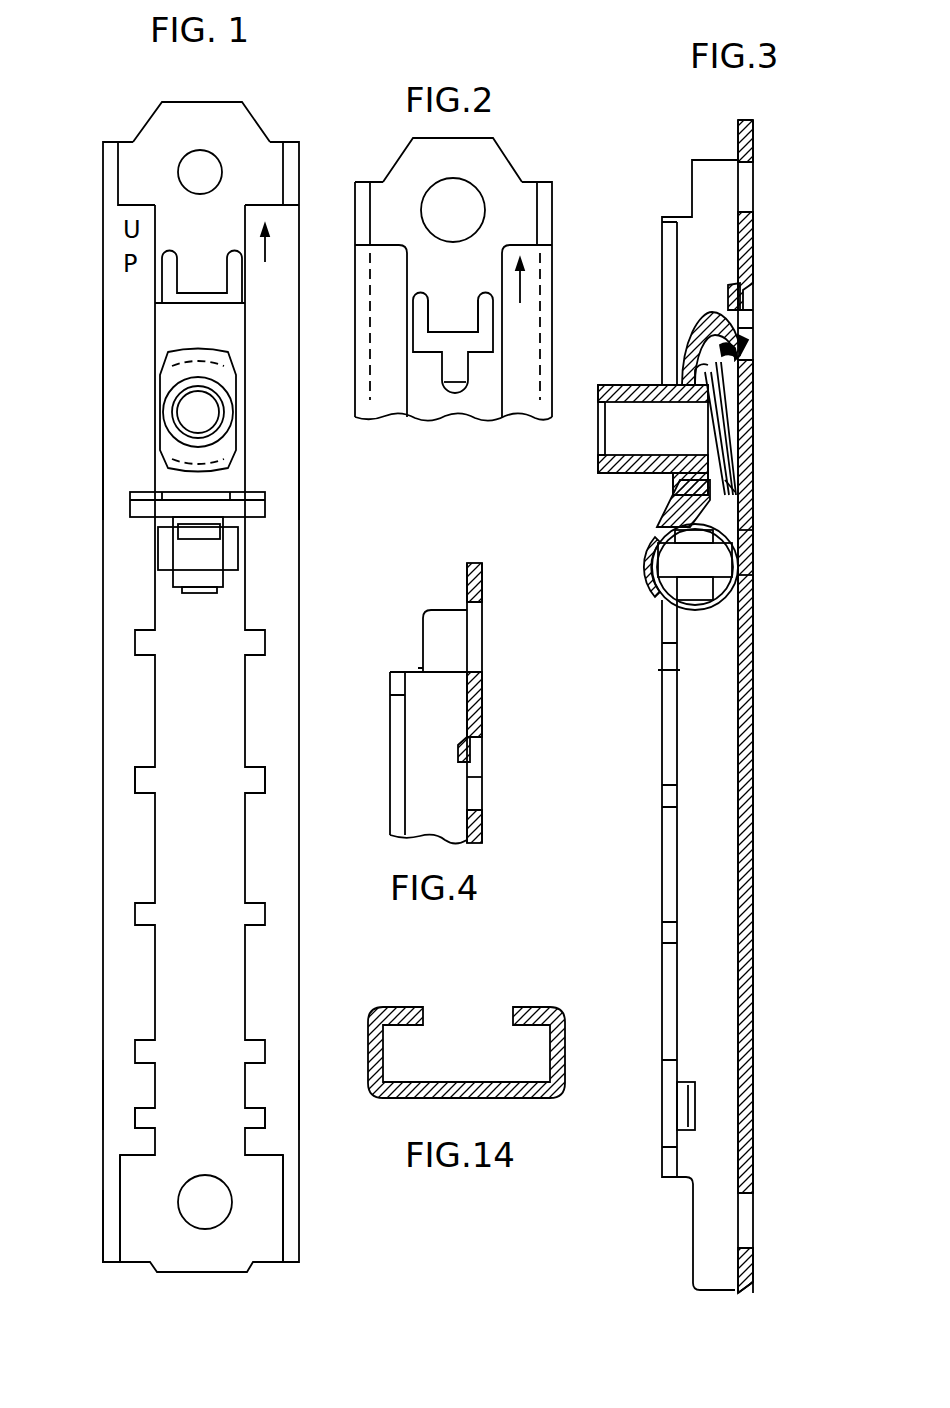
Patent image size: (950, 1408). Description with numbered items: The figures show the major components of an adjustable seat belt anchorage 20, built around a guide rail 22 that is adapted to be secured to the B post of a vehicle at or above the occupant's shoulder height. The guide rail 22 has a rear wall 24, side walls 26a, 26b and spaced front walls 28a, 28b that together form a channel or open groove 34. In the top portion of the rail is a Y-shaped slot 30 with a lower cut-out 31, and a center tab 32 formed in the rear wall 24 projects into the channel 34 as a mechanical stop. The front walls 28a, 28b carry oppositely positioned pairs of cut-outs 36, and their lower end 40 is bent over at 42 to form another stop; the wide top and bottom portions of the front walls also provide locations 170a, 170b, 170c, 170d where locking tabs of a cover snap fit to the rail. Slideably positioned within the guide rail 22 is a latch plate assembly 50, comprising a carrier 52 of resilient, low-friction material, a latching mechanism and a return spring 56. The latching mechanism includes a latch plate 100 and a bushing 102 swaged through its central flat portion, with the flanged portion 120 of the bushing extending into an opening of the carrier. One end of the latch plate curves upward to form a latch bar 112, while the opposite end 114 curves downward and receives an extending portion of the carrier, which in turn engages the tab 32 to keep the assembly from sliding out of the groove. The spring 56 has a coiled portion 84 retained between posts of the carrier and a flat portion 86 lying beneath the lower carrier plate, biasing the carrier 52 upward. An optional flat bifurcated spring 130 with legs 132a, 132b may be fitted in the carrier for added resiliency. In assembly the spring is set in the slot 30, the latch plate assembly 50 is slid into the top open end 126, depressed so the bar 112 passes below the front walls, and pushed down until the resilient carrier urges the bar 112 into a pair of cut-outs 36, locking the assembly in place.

In FIG. 1, the adjustable seat belt anchorage 20 is at (285, 93).
In FIG. 1, the guide rail 22 is at (299, 143).
In FIG. 14, the guide rail 22 is at (383, 1056).
In FIG. 3, the guide rail 22 is at (754, 146).
In FIG. 1, the rear wall 24 is at (237, 127).
In FIG. 2, the rear wall 24 is at (490, 158).
In FIG. 4, the rear wall 24 is at (480, 712).
In FIG. 3, the rear wall 24 is at (748, 742).
In FIG. 1, the side wall 26a is at (104, 312).
In FIG. 3, the side wall 26a is at (692, 244).
In FIG. 1, the side wall 26b is at (299, 323).
In FIG. 1, the front wall 28a is at (104, 402).
In FIG. 1, the front wall 28b is at (270, 453).
In FIG. 2, the Y-shaped slot 30 is at (420, 310).
In FIG. 4, the Y-shaped slot 30 is at (477, 793).
In FIG. 3, the Y-shaped slot 30 is at (755, 321).
In FIG. 2, the lower cut-out 31 is at (457, 374).
In FIG. 2, the center tab 32 is at (453, 328).
In FIG. 4, the center tab 32 is at (456, 748).
In FIG. 3, the center tab 32 is at (745, 300).
In FIG. 1, the channel 34 is at (222, 703).
In FIG. 1, the cut-outs 36 is at (142, 780).
In FIG. 1, the lower end 40 is at (110, 1215).
In FIG. 1, the bent-over portion 42 is at (115, 1100).
In FIG. 3, the bent-over portion 42 is at (675, 1105).
In FIG. 1, the latch plate assembly 50 is at (222, 335).
In FIG. 3, the latch plate assembly 50 is at (660, 379).
In FIG. 3, the carrier 52 is at (757, 352).
In FIG. 1, the return spring 56 is at (190, 593).
In FIG. 3, the return spring 56 is at (715, 600).
In FIG. 3, the coiled portion 84 is at (660, 592).
In FIG. 3, the flat portion 86 is at (752, 402).
In FIG. 3, the latch plate 100 is at (693, 363).
In FIG. 3, the bushing 102 is at (614, 478).
In FIG. 3, the latch bar 112 is at (660, 532).
In FIG. 3, the downwardly curved end 114 is at (688, 330).
In FIG. 3, the flanged portion 120 is at (756, 342).
In FIG. 1, the top open end 126 is at (160, 205).
In FIG. 3, the bifurcated spring 130 is at (752, 582).
In FIG. 3, the spring leg 132a is at (750, 540).
In FIG. 3, the spring leg 132b is at (745, 492).
In FIG. 1, the locking location 170a is at (104, 497).
In FIG. 1, the locking location 170b is at (299, 402).
In FIG. 1, the locking location 170c is at (157, 1083).
In FIG. 1, the locking location 170d is at (253, 1090).